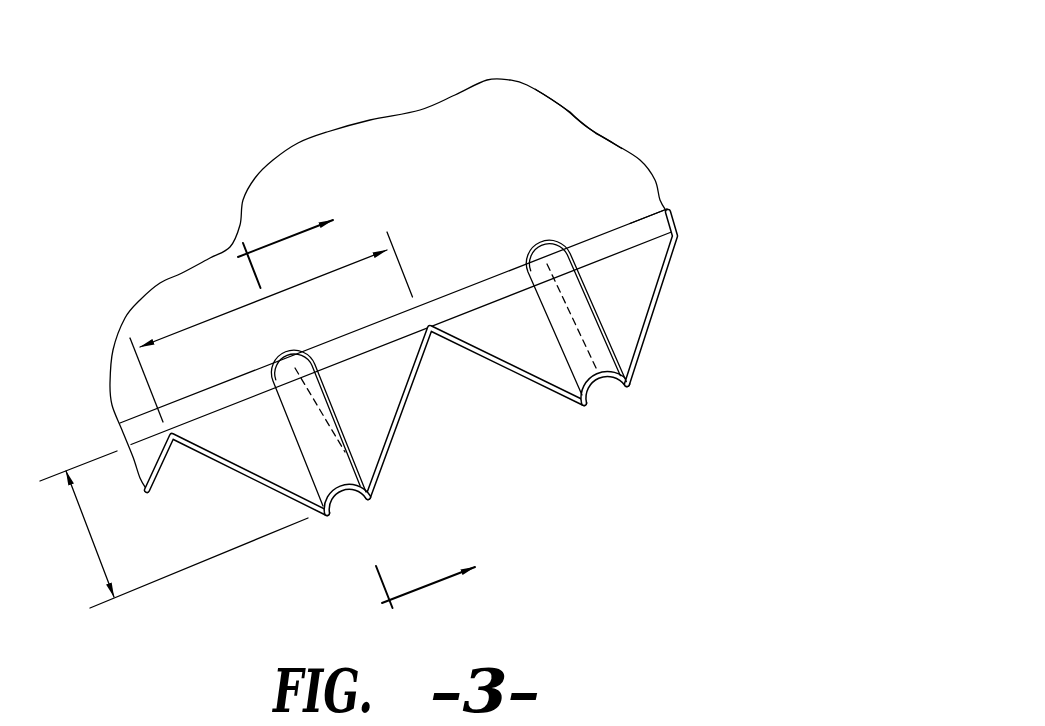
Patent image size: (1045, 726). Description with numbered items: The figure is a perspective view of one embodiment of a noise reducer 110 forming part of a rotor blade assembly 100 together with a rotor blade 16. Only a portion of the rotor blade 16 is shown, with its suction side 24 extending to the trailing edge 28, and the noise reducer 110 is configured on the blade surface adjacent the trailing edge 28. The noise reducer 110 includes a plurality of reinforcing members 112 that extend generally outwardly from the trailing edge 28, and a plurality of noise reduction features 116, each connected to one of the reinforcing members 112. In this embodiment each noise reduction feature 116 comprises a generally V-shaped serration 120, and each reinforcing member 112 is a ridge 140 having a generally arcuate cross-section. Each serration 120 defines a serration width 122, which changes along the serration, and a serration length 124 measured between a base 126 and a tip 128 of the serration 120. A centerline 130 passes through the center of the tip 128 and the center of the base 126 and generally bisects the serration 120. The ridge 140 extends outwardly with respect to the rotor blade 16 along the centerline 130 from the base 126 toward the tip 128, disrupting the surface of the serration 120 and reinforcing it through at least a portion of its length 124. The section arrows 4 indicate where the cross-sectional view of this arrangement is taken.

The rotor blade 16 is at (525, 84).
The suction side 24 is at (570, 152).
The trailing edge 28 is at (653, 218).
The rotor blade assembly 100 is at (682, 93).
The noise reducer 110 is at (690, 257).
The reinforcing member 112 is at (317, 443).
The noise reduction feature 116 is at (410, 417).
The serration 120 is at (527, 348).
The serration width 122 is at (217, 313).
The serration length 124 is at (83, 527).
The base 126 is at (363, 343).
The tip 128 is at (333, 527).
The centerline 130 is at (622, 366).
The ridge 140 is at (300, 409).
The section line 4- 4 is at (376, 399).